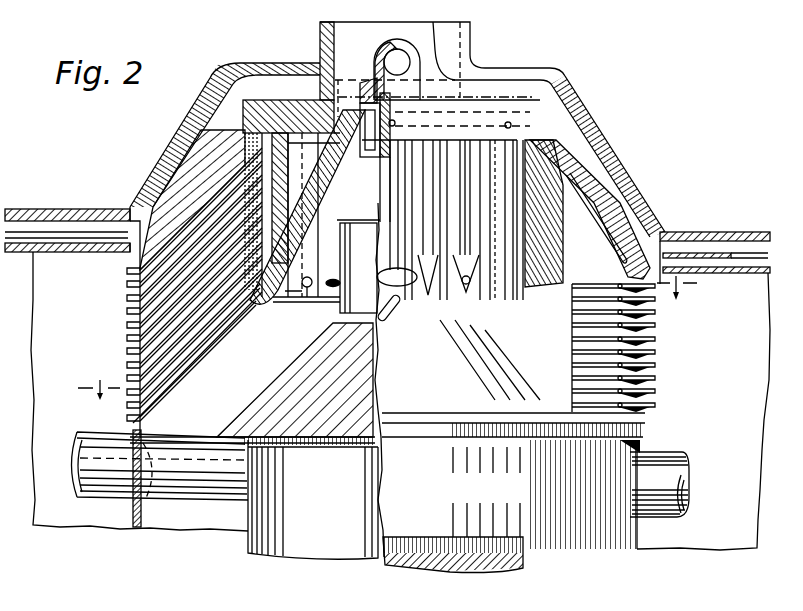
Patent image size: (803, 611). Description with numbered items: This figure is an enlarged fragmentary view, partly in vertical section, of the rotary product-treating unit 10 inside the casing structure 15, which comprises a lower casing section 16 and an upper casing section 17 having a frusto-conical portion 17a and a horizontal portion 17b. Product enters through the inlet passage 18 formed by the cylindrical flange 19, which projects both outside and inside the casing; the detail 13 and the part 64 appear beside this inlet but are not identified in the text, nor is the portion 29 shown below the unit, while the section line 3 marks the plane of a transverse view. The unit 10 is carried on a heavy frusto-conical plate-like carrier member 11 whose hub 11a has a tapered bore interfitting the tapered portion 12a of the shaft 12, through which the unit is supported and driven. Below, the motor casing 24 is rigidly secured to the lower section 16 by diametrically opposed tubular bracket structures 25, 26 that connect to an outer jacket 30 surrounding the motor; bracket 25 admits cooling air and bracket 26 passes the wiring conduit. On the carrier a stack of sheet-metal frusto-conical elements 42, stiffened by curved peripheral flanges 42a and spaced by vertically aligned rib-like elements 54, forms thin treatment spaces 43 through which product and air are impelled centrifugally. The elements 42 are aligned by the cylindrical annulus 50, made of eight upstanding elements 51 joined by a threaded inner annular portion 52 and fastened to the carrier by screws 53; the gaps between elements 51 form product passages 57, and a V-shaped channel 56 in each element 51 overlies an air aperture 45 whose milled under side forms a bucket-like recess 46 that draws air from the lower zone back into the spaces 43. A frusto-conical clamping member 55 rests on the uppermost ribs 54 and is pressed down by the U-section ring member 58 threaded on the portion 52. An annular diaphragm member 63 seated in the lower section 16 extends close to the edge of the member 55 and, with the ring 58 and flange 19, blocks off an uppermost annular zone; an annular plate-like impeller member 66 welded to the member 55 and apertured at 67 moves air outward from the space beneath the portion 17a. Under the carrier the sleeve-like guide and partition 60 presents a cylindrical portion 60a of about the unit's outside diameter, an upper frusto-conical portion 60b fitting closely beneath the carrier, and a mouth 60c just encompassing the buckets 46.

The section line 3- 3 is at (387, 349).
The rotary product-treating unit 10 is at (120, 269).
The plate-like carrier member 11 is at (392, 384).
The hub 11a is at (340, 220).
The shaft 12 is at (359, 268).
The tapered portion 12a is at (348, 200).
The lug bore 13 is at (397, 43).
The casing structure 15 is at (80, 518).
The lower casing section 16 is at (43, 487).
The upper casing section 17 is at (13, 210).
The frusto-conical portion 17a is at (160, 182).
The horizontal portion 17b is at (43, 208).
The inlet passage 18 is at (360, 33).
The cylindrical flange 19 is at (332, 52).
The motor casing 24 is at (311, 277).
The bracket structure 25 is at (160, 466).
The bracket structure 26 is at (672, 479).
The platform 29 is at (295, 380).
The outer jacket 30 is at (280, 548).
The frusto-conical elements 42 is at (193, 360).
The curved flange 42a is at (127, 315).
The treatment spaces 43 is at (548, 280).
The apertures 45 is at (312, 278).
The bucket-like recess 46 is at (324, 310).
The cylindrical annulus 50 is at (490, 300).
The upstanding elements 51 is at (280, 187).
The inner annular portion 52 is at (263, 133).
The screws 53 is at (341, 283).
The rib-like elements 54 is at (255, 208).
The clamping member 55 is at (210, 162).
The V-shaped channel 56 is at (270, 98).
The passages 57 is at (405, 270).
The ring member 58 is at (307, 60).
The guide and partition 60 is at (130, 520).
The intermediate cylindrical portion 60a is at (162, 540).
The upper portion 60b is at (205, 362).
The mouth 60c is at (270, 302).
The annular diaphragm member 63 is at (43, 253).
The top flange 64 is at (283, 100).
The annular plate-like member 66 is at (70, 233).
The apertures 67 is at (131, 208).